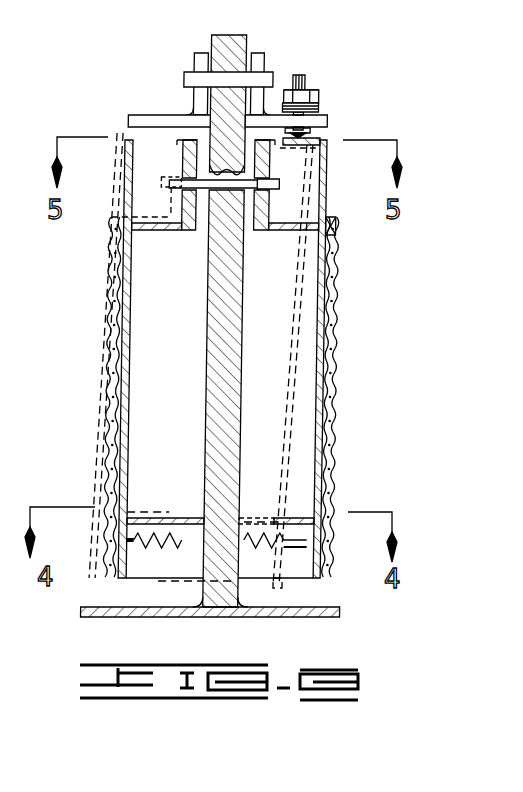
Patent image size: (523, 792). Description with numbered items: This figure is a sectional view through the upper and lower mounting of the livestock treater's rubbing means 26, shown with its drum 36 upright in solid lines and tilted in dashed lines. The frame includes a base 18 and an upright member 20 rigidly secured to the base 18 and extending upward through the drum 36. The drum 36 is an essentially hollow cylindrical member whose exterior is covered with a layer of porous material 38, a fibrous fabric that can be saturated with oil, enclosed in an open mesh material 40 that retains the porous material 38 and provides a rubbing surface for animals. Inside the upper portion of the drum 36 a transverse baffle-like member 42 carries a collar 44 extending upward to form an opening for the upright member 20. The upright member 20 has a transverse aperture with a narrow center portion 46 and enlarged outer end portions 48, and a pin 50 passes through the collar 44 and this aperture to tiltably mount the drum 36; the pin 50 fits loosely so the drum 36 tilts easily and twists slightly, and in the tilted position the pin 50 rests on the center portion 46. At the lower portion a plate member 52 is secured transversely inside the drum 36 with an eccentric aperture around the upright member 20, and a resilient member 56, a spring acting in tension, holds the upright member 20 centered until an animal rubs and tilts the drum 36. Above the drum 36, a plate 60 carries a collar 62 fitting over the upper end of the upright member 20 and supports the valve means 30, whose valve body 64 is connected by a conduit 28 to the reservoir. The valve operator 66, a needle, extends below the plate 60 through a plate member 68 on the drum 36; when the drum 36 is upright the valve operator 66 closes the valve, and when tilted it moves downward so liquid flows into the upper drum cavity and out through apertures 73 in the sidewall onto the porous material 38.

The base 18 is at (140, 616).
The upright member 20 is at (210, 353).
The rubbing means 26 is at (92, 367).
The conduit 28 is at (298, 74).
The valve means 30 is at (338, 79).
The drum 36 is at (323, 297).
The porous material 38 is at (331, 333).
The open mesh material 40 is at (334, 385).
The baffle-like member 42 is at (138, 230).
The collar 44 is at (200, 160).
The narrow center portion 46 is at (180, 140).
The enlarged outer end portions 48 is at (245, 165).
The pin 50 is at (276, 186).
The plate member 52 is at (191, 518).
The resilient member 56 is at (170, 545).
The plate 60 is at (165, 116).
The collar 62 is at (196, 70).
The valve body 64 is at (296, 99).
The valve operator 66 is at (306, 135).
The plate member 68 is at (292, 149).
The apertures 73 is at (327, 218).